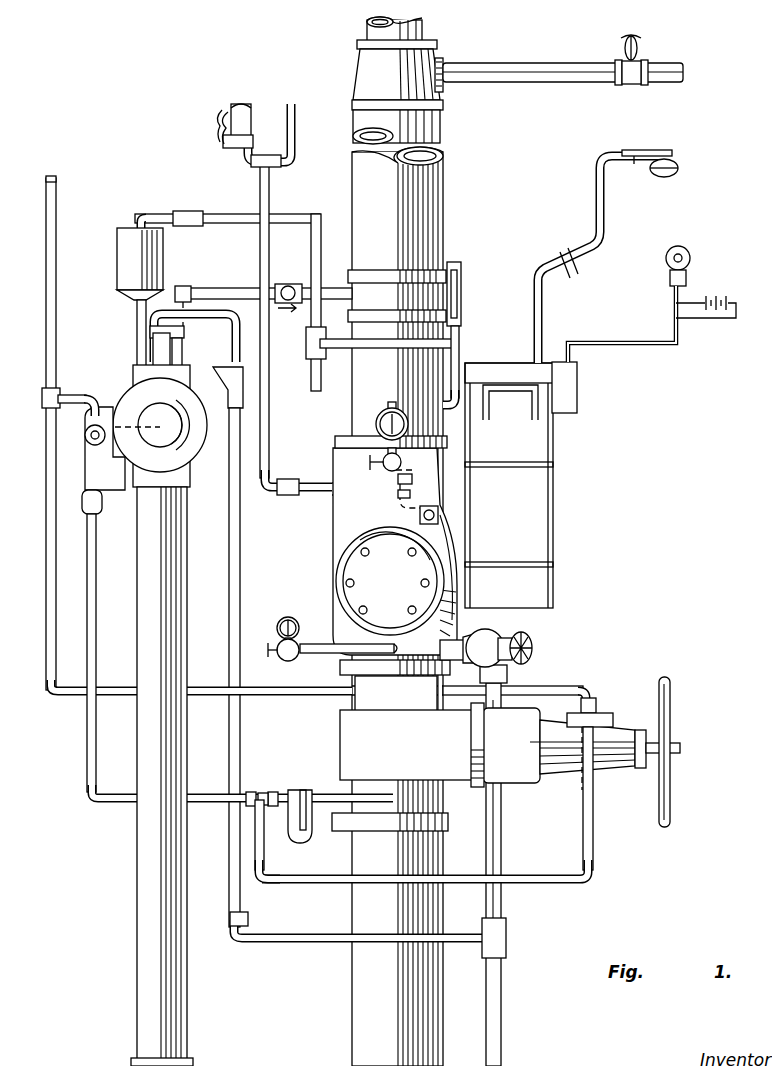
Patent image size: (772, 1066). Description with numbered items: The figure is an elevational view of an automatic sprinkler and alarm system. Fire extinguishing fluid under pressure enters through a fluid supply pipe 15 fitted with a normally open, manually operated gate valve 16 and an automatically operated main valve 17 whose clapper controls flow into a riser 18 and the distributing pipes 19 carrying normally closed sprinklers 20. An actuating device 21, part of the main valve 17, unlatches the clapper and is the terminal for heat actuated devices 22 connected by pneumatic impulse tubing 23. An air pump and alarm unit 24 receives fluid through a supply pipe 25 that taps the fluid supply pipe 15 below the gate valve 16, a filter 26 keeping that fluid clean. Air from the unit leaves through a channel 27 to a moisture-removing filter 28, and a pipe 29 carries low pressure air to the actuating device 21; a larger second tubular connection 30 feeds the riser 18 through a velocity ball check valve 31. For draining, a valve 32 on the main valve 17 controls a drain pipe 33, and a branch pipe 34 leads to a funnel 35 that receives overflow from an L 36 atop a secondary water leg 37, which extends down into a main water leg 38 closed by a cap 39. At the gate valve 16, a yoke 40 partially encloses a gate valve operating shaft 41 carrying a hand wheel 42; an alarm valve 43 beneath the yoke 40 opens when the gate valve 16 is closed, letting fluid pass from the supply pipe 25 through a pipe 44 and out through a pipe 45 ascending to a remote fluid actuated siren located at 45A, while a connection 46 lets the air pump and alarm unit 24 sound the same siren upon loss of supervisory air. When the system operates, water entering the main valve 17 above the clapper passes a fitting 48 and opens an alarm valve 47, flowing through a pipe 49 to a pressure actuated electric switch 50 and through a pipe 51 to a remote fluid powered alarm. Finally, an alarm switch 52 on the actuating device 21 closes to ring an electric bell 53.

The fluid supply pipe 15 is at (397, 606).
The gate valve 16 is at (436, 753).
The main valve 17 is at (395, 561).
The riser 18 is at (404, 330).
The distributing pipes 19 is at (425, 30).
The sprinklers 20 is at (637, 48).
The actuating device 21 is at (553, 522).
The heat actuated devices 22 is at (678, 172).
The pneumatic impulse tubing 23 is at (604, 218).
The air pump and alarm unit 24 is at (175, 458).
The supply pipe 25 is at (96, 640).
The filter 26 is at (300, 843).
The channel 27 is at (137, 318).
The filter 28 is at (117, 268).
The pipe 29 is at (232, 224).
The second tubular connection 30 is at (203, 288).
The velocity ball check valve 31 is at (288, 284).
The valve 32 is at (532, 645).
The drain pipe 33 is at (501, 840).
The branch pipe 34 is at (240, 745).
The funnel 35 is at (226, 400).
The L 36 is at (220, 314).
The secondary water leg 37 is at (153, 352).
The main water leg 38 is at (145, 565).
The cap 39 is at (190, 1060).
The yoke 40 is at (606, 768).
The gate valve operating shaft 41 is at (680, 747).
The hand wheel 42 is at (670, 700).
The alarm valve 43 is at (612, 713).
The pipe 44 is at (596, 705).
The pipe 45 is at (46, 568).
The remote position of fluid actuated siren 45A is at (58, 180).
The connection 46 is at (76, 386).
The alarm valve 47 is at (396, 500).
The fitting 48 is at (438, 515).
The pipe 49 is at (269, 425).
The pressure actuated electric switch 50 is at (245, 104).
The pipe 51 is at (295, 120).
The alarm switch 52 is at (577, 402).
The electric bell 53 is at (690, 262).